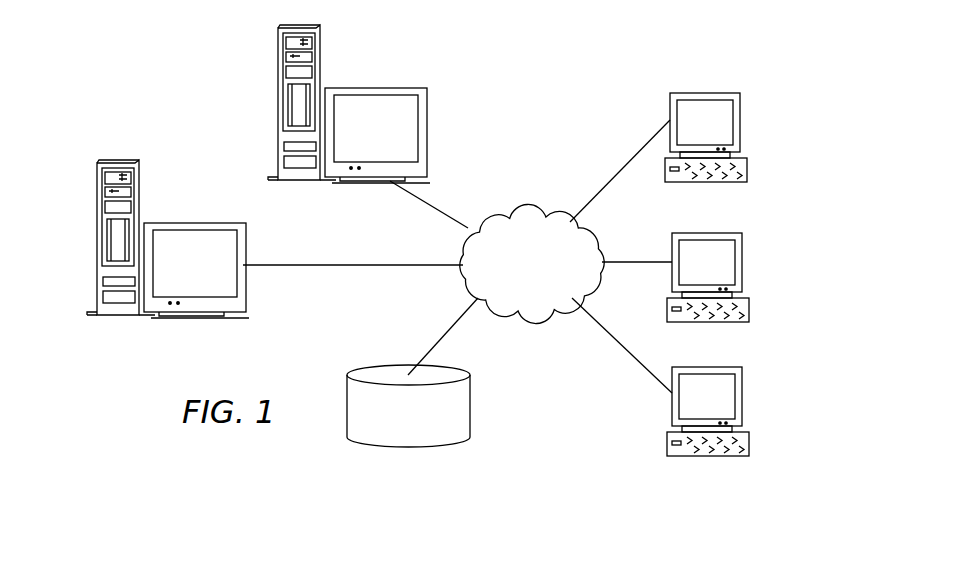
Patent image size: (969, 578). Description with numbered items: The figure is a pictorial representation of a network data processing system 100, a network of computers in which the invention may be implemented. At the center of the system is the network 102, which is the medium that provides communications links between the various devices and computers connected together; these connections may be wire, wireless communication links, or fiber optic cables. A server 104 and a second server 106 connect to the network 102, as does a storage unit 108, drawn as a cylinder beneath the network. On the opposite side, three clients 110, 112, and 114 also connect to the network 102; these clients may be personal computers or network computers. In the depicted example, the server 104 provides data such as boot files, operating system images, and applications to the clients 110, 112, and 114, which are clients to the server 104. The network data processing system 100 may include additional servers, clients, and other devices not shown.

The network data processing system 100 is at (578, 106).
The network 102 is at (500, 215).
The server 104 is at (278, 105).
The server 106 is at (97, 240).
The storage unit 108 is at (392, 448).
The client 110 is at (740, 122).
The client 112 is at (742, 262).
The client 114 is at (743, 397).